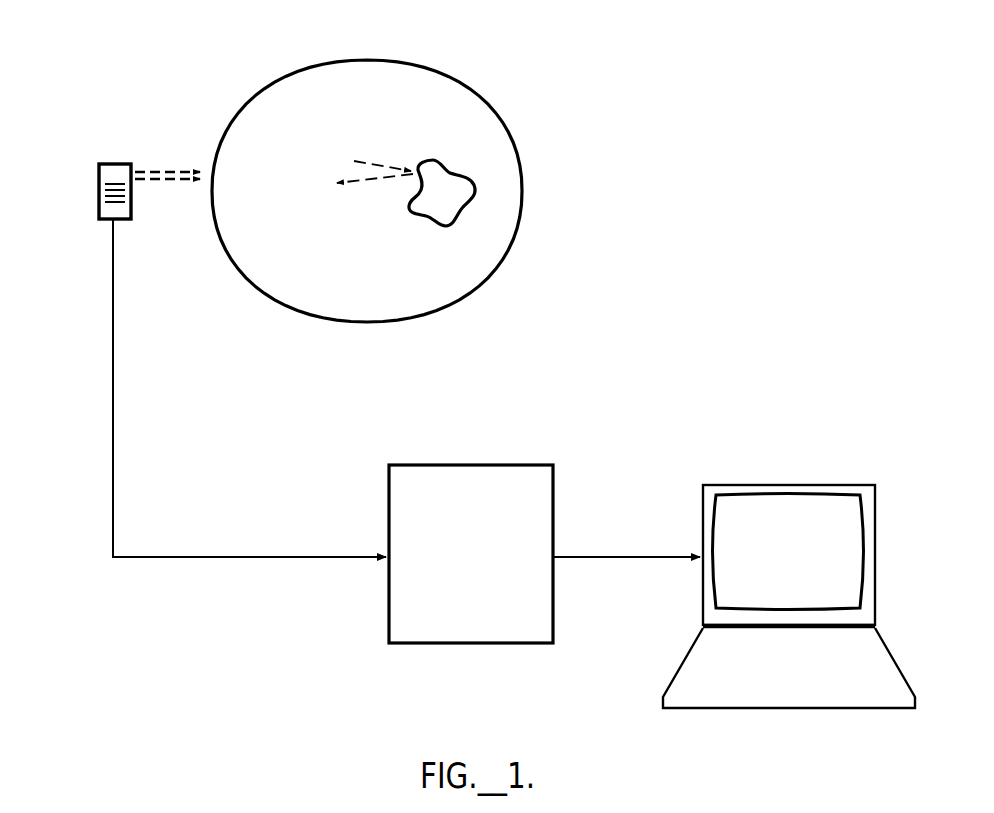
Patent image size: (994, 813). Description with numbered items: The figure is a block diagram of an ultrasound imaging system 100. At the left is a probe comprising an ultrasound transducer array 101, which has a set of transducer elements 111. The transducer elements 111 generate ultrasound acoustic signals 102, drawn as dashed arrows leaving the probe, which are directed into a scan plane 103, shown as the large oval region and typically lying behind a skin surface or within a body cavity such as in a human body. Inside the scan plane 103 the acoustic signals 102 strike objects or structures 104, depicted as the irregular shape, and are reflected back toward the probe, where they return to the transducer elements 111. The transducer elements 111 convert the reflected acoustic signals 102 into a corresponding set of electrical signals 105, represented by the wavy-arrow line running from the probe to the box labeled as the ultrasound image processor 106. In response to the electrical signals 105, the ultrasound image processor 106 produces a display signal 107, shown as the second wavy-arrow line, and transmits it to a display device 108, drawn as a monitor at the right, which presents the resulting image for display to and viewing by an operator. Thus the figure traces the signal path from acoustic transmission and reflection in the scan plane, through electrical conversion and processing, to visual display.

The ultrasound imaging system 100 is at (185, 42).
The ultrasound transducer array 101 is at (108, 163).
The ultrasound acoustic signals 102 is at (152, 166).
The scan plane 103 is at (493, 110).
The objects or structures 104 is at (430, 160).
The electrical signals 105 is at (291, 540).
The ultrasound image processor 106 is at (531, 629).
The display signal 107 is at (677, 541).
The display device 108 is at (841, 591).
The transducer elements 111 is at (99, 197).